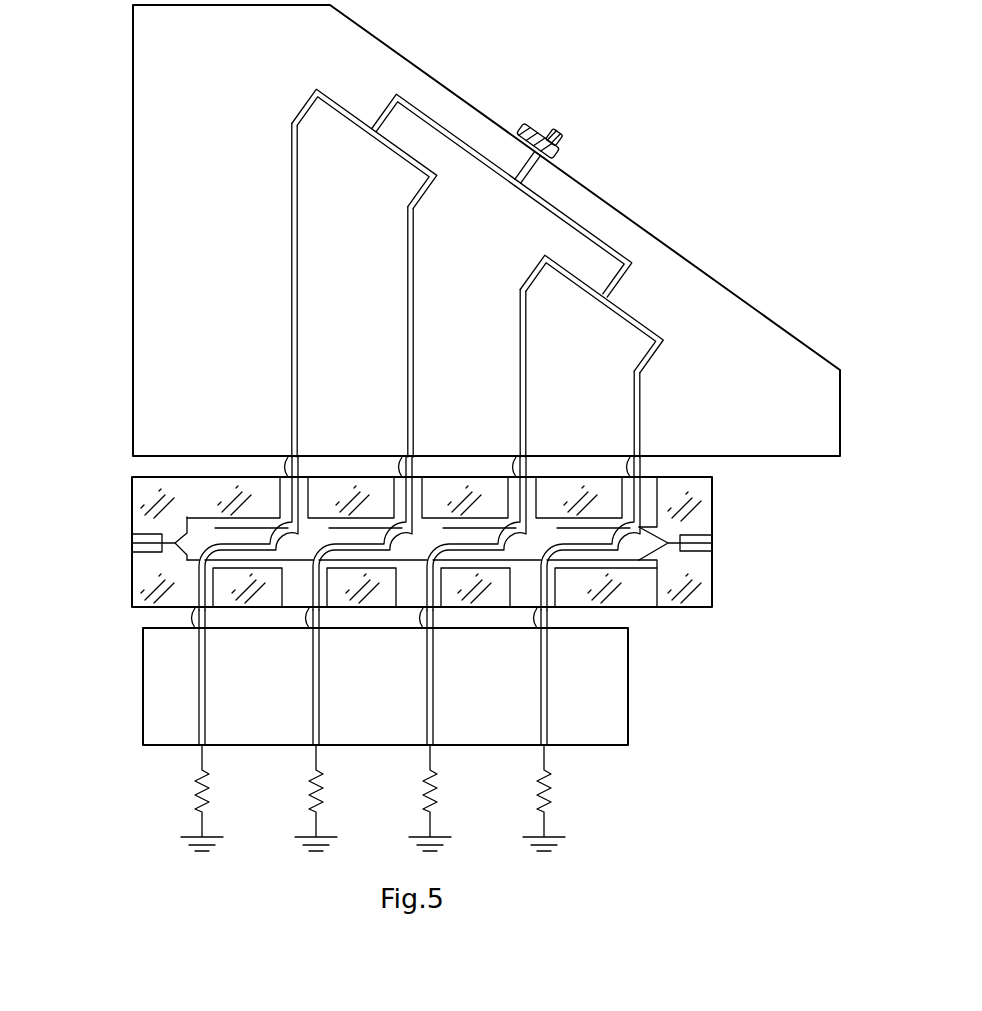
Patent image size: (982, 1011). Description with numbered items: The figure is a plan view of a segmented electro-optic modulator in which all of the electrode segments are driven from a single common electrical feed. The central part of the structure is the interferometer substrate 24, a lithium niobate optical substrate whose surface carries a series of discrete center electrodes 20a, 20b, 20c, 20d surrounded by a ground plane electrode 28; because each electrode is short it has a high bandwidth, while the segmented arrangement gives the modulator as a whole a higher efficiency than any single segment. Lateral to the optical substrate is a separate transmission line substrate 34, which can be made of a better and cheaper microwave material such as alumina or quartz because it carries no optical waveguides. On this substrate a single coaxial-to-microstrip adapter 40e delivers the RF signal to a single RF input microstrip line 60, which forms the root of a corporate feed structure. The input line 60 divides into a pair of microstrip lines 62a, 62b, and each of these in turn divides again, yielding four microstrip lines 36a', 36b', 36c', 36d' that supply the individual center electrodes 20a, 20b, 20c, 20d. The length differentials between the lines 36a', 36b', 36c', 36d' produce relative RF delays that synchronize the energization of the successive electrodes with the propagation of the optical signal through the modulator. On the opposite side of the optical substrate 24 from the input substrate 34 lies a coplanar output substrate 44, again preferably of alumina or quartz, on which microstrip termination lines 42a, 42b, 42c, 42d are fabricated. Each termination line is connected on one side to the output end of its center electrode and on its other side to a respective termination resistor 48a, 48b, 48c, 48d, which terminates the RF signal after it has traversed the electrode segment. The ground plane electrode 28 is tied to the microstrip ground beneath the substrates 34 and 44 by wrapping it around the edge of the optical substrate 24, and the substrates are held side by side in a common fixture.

The transmission line substrate 34 is at (133, 232).
The ground plane electrode 28 is at (133, 493).
The interferometer substrate 24 is at (126, 590).
The output substrate 44 is at (143, 683).
The microstrip line 62b is at (450, 128).
The microstrip line 62a is at (598, 237).
The RF input microstrip line 60 is at (540, 177).
The coaxial-to-microstrip adapter 40e is at (567, 155).
The microstrip line 36d' is at (239, 291).
The microstrip line 36c' is at (362, 332).
The microstrip line 36b' is at (476, 374).
The microstrip line 36a' is at (590, 406).
The center electrode 20d is at (233, 540).
The center electrode 20c is at (356, 540).
The center electrode 20b is at (474, 540).
The center electrode 20a is at (581, 543).
The microstrip termination line 42d is at (206, 690).
The microstrip termination line 42c is at (320, 690).
The microstrip termination line 42b is at (434, 692).
The microstrip termination line 42a is at (548, 690).
The termination resistor 48d is at (199, 793).
The termination resistor 48c is at (313, 791).
The termination resistor 48b is at (426, 793).
The termination resistor 48a is at (540, 793).